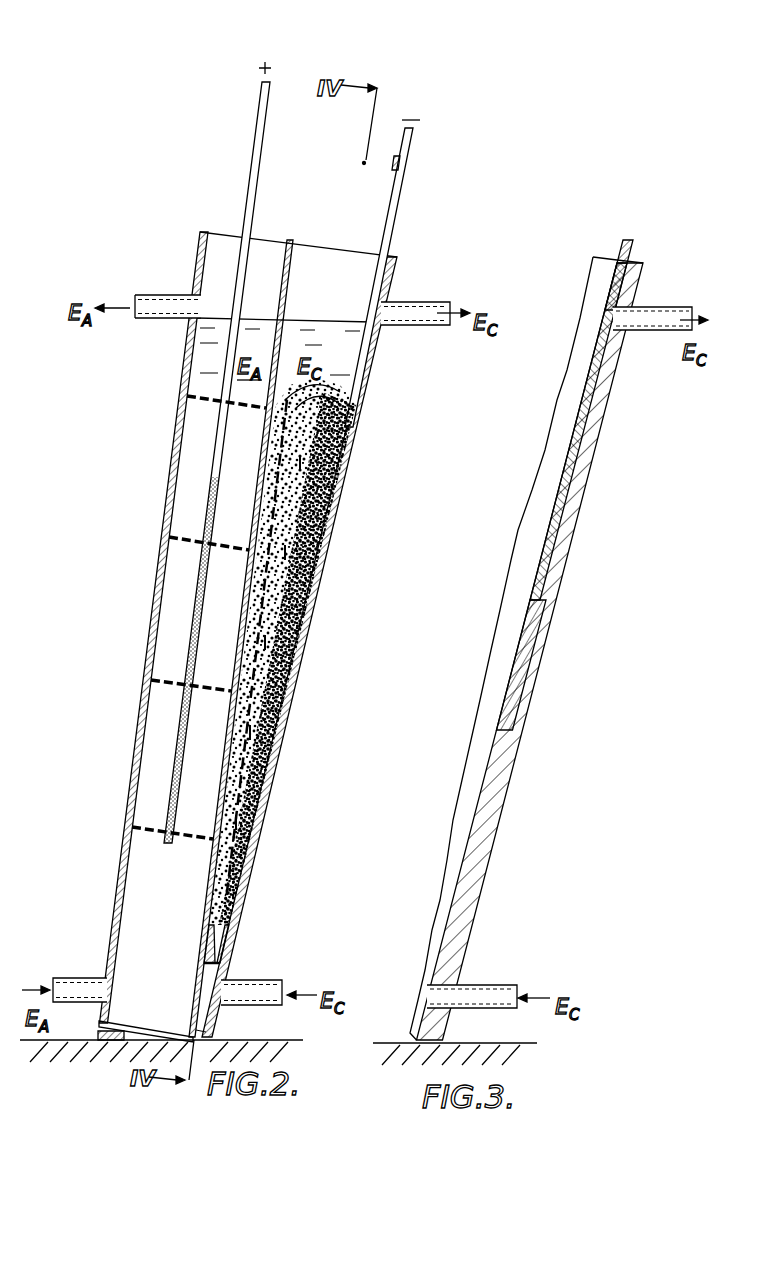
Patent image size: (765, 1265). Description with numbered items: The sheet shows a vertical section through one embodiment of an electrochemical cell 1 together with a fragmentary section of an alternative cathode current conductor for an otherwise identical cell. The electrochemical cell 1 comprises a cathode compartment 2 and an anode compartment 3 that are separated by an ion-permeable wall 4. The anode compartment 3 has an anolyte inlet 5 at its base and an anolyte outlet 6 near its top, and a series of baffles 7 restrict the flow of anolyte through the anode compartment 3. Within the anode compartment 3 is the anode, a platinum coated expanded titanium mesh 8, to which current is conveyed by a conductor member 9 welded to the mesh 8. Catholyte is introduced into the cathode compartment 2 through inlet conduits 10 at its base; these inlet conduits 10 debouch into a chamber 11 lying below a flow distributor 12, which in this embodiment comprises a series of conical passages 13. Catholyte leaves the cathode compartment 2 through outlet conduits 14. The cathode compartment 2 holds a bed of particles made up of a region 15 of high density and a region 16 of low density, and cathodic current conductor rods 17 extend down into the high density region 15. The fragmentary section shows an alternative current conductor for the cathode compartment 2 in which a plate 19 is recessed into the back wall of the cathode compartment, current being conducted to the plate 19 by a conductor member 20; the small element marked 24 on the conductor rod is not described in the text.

In FIG. 2, the electrochemical cell 1 is at (158, 463).
In FIG. 2, the cathode compartment 2 is at (263, 800).
In FIG. 3, the cathode compartment 2 is at (485, 830).
In FIG. 2, the anode compartment 3 is at (133, 750).
In FIG. 2, the ion-permeable wall 4 is at (223, 747).
In FIG. 2, the anolyte inlet 5 is at (78, 983).
In FIG. 2, the anolyte outlet 6 is at (180, 296).
In FIG. 2, the baffles 7 is at (183, 398).
In FIG. 2, the platinum coated expanded titanium mesh 8 is at (190, 593).
In FIG. 2, the conductor member 9 is at (247, 193).
In FIG. 2, the inlet conduits 10 is at (265, 979).
In FIG. 3, the inlet conduits 10 is at (497, 985).
In FIG. 2, the chamber 11 is at (200, 1010).
In FIG. 2, the flow distributor 12 is at (223, 952).
In FIG. 2, the conical passages 13 is at (203, 930).
In FIG. 2, the outlet conduits 14 is at (400, 302).
In FIG. 3, the outlet conduits 14 is at (657, 331).
In FIG. 2, the high density region 15 is at (307, 594).
In FIG. 2, the low density region 16 is at (243, 678).
In FIG. 2, the cathodic current conductor rods 17 is at (388, 228).
In FIG. 3, the plate 19 is at (523, 672).
In FIG. 3, the conductor member 20 is at (547, 553).
In FIG. 2, the contact element 24 is at (395, 158).